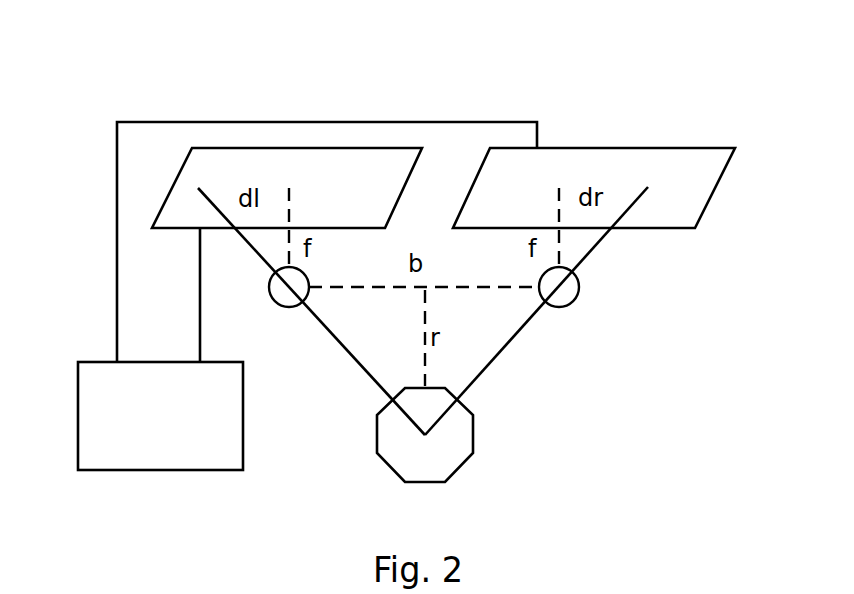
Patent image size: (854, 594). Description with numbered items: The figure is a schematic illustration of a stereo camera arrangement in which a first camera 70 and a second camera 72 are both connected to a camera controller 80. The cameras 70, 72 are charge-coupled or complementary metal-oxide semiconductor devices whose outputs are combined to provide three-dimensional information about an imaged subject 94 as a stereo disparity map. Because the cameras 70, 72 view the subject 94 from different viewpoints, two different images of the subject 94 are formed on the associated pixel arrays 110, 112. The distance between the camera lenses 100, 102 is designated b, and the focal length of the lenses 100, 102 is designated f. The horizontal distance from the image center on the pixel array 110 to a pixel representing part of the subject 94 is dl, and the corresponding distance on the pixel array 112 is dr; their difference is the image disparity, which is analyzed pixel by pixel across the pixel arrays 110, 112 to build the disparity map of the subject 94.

The first camera 70 is at (212, 78).
The second camera 72 is at (577, 70).
The pixel array 110 is at (172, 190).
The pixel array 112 is at (592, 147).
The camera lens 100 is at (287, 306).
The camera lens 102 is at (562, 306).
The imaged subject 94 is at (472, 415).
The camera controller 80 is at (250, 402).